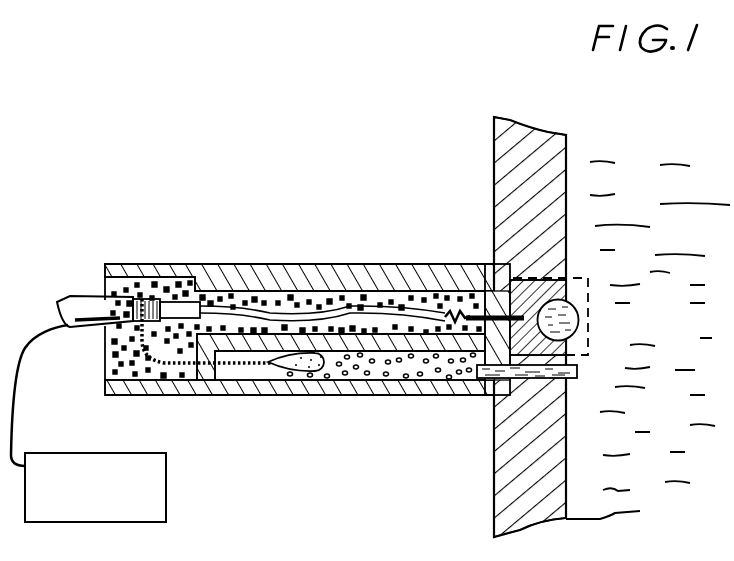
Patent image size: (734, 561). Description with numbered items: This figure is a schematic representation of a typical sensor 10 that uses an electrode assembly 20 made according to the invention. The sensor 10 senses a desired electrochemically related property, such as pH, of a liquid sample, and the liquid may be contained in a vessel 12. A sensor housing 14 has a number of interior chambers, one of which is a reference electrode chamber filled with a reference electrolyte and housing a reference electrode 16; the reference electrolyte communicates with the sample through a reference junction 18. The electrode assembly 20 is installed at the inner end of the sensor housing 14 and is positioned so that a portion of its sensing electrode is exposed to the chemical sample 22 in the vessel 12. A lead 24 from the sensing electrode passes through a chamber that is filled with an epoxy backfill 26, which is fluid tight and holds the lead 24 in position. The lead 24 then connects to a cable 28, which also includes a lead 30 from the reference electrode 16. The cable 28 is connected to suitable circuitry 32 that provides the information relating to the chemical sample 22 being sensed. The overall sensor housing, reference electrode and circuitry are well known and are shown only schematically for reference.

The sensor 10 is at (389, 243).
The vessel 12 is at (640, 138).
The sensor housing 14 is at (232, 276).
The reference electrode 16 is at (311, 392).
The reference junction 18 is at (494, 397).
The electrode assembly 20 is at (578, 334).
The chemical sample 22 is at (612, 194).
The lead 24 is at (398, 306).
The epoxy backfill 26 is at (298, 296).
The cable 28 is at (77, 300).
The lead 30 is at (176, 395).
The circuitry 32 is at (155, 501).